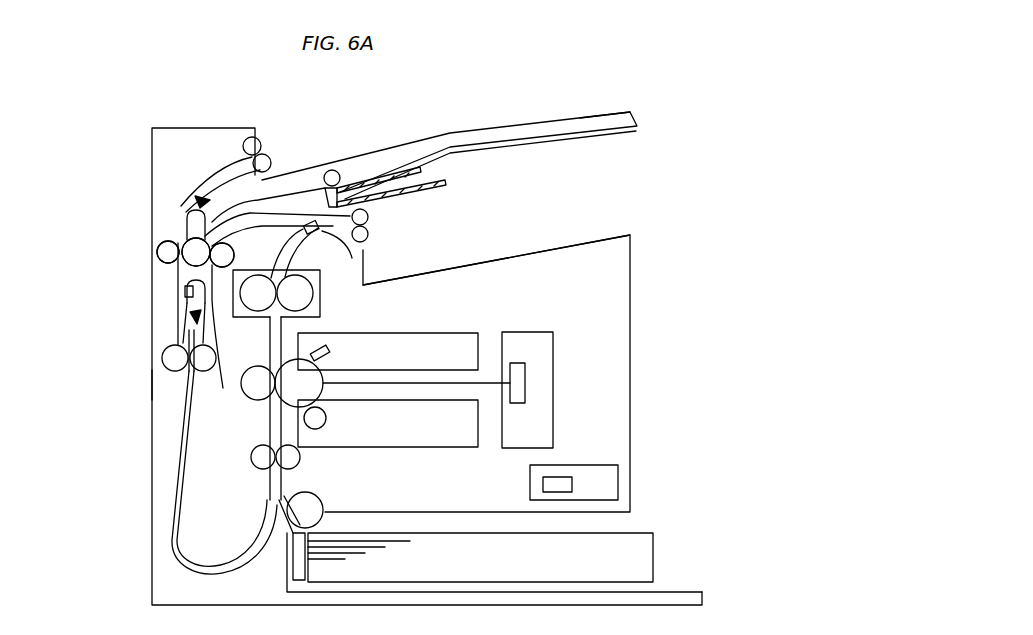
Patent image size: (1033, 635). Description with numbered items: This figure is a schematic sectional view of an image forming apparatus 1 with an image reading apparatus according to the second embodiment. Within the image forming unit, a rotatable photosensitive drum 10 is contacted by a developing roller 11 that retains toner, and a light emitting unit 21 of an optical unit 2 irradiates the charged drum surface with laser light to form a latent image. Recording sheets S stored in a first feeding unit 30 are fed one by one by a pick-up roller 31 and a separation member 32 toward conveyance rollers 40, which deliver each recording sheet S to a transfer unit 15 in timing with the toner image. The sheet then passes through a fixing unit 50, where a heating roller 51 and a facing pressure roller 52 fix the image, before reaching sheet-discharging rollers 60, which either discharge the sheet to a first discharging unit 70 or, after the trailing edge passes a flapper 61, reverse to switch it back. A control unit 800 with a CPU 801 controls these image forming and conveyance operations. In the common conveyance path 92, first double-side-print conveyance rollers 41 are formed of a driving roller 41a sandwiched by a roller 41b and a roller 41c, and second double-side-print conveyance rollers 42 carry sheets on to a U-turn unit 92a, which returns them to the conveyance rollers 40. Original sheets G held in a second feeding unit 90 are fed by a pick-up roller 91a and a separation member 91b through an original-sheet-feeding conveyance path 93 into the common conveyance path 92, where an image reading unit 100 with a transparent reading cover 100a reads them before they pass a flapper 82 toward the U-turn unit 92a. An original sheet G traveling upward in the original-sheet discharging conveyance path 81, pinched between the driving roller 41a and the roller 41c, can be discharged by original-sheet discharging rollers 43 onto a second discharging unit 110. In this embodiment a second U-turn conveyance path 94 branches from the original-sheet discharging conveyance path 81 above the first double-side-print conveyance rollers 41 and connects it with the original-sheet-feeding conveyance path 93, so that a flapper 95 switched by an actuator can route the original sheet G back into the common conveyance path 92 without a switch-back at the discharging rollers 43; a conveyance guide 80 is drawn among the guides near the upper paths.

The image forming apparatus 1 is at (630, 297).
The optical unit 2 is at (527, 332).
The photosensitive drum 10 is at (335, 354).
The developing roller 11 is at (326, 418).
The transfer unit 15 is at (255, 401).
The light emitting unit 21 is at (525, 381).
The first feeding unit 30 is at (688, 592).
The pick-up roller 31 is at (322, 500).
The separation member 32 is at (293, 563).
The conveyance rollers 40 is at (300, 458).
The first double-side-print conveyance rollers 41 is at (82, 185).
The driving roller 41a is at (182, 248).
The roller 41b is at (186, 218).
The roller 41c is at (165, 252).
The second double-side-print conveyance rollers 42 is at (152, 375).
The original-sheet discharging rollers 43 is at (255, 140).
The fixing unit 50 is at (325, 284).
The heating roller 51 is at (313, 298).
The pressure roller 52 is at (252, 305).
The sheet-discharging rollers 60 is at (368, 230).
The flapper 61 is at (352, 250).
The first discharging unit 70 is at (580, 240).
The conveyance guide 80 is at (267, 217).
The original-sheet discharging conveyance path 81 is at (187, 206).
The flapper 82 is at (170, 358).
The second feeding unit 90 is at (555, 148).
The pick-up roller 91a is at (360, 157).
The separation member 91b is at (440, 190).
The common conveyance path 92 is at (222, 415).
The U-turn unit 92a is at (167, 507).
The original-sheet-feeding conveyance path 93 is at (308, 184).
The second U-turn conveyance path 94 is at (206, 200).
The flapper 95 is at (193, 210).
The image reading unit 100 is at (188, 310).
The reading cover 100a is at (185, 292).
The second discharging unit 110 is at (430, 137).
The control unit 800 is at (604, 465).
The CPU 801 is at (572, 487).
The original sheet G is at (603, 115).
The recording sheet S is at (660, 540).